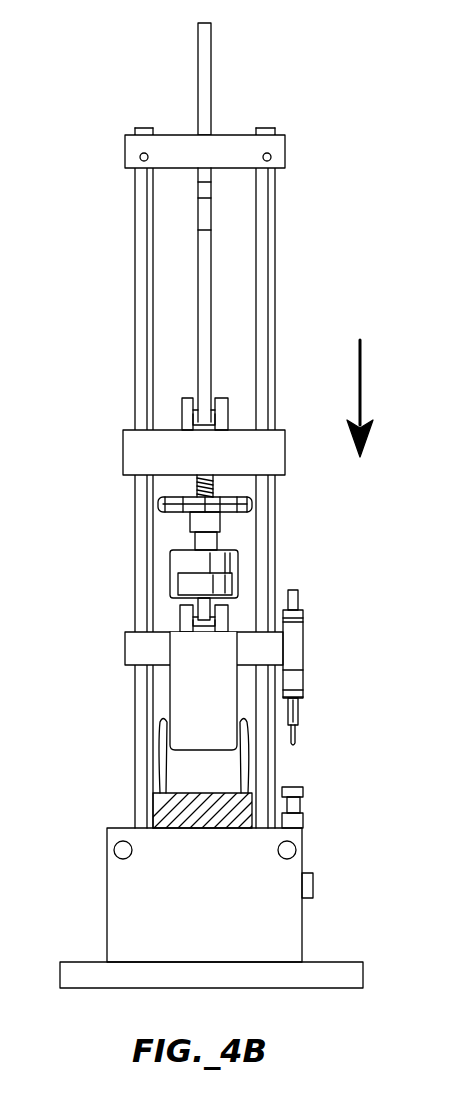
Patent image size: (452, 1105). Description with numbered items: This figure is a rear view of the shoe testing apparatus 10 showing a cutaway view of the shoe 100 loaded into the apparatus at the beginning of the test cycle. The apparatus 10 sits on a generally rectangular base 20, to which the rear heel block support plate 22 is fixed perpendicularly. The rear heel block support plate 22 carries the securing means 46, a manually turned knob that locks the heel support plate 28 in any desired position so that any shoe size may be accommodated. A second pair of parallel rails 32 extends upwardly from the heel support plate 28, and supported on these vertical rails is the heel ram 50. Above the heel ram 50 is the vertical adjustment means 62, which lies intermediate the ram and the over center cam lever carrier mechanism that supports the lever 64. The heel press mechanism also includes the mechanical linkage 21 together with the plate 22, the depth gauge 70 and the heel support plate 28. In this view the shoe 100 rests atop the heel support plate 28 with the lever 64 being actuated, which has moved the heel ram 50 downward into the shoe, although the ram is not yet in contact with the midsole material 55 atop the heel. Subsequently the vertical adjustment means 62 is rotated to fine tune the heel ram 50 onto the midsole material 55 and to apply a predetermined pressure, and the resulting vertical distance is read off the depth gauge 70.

The shoe testing apparatus 10 is at (95, 135).
The base 20 is at (80, 978).
The mechanical linkage 21 is at (207, 277).
The rear heel block support plate 22 is at (214, 923).
The heel support plate 28 is at (184, 836).
The second pair of parallel rails 32 is at (270, 223).
The securing means 46 is at (313, 880).
The heel ram 50 is at (203, 691).
The midsole material 55 is at (170, 808).
The vertical adjustment means 62 is at (160, 503).
The lever 64 is at (207, 55).
The depth gauge 70 is at (303, 640).
The shoe 100 is at (165, 758).